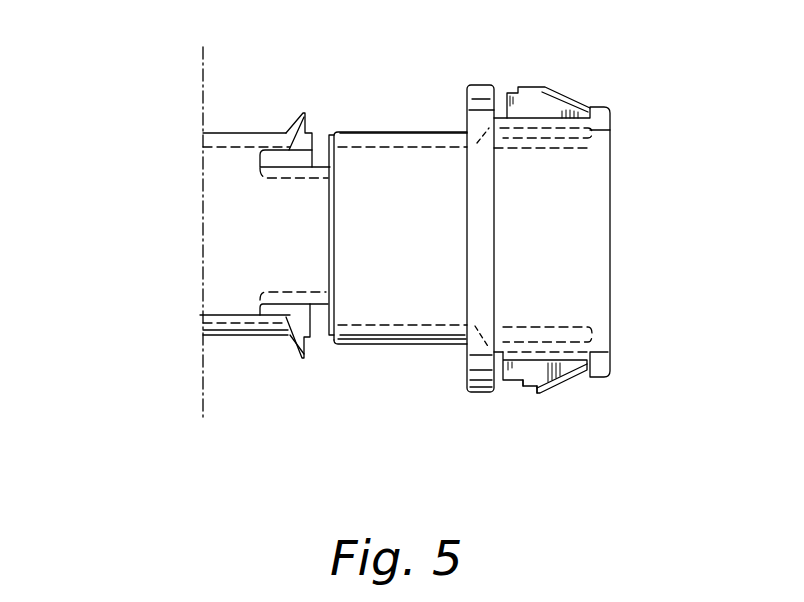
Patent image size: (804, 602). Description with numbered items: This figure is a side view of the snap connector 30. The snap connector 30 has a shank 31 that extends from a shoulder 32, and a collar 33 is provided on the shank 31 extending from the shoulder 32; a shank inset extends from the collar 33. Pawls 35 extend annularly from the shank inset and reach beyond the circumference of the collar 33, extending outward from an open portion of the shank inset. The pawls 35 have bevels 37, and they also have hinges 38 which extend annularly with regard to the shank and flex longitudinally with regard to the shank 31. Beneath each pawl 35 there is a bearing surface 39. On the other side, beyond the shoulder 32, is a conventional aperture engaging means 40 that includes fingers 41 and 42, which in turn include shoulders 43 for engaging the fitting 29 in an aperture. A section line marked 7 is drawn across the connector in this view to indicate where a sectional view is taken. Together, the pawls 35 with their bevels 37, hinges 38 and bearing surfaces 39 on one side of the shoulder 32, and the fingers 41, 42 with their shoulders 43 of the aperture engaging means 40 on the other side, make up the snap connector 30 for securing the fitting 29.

The section line VII-VII 7 is at (203, 52).
The fitting 29 is at (368, 397).
The snap connector 30 is at (405, 357).
The shank 31 is at (325, 351).
The shoulder 32 is at (467, 93).
The collar 33 is at (417, 132).
The pawls 35 is at (300, 359).
The bevels 37 is at (288, 343).
The hinges 38 is at (243, 137).
The bearing surfaces 39 is at (306, 136).
The aperture engaging means 40 is at (586, 250).
The finger 41 is at (567, 110).
The finger 42 is at (562, 393).
The shoulders 43 is at (523, 390).